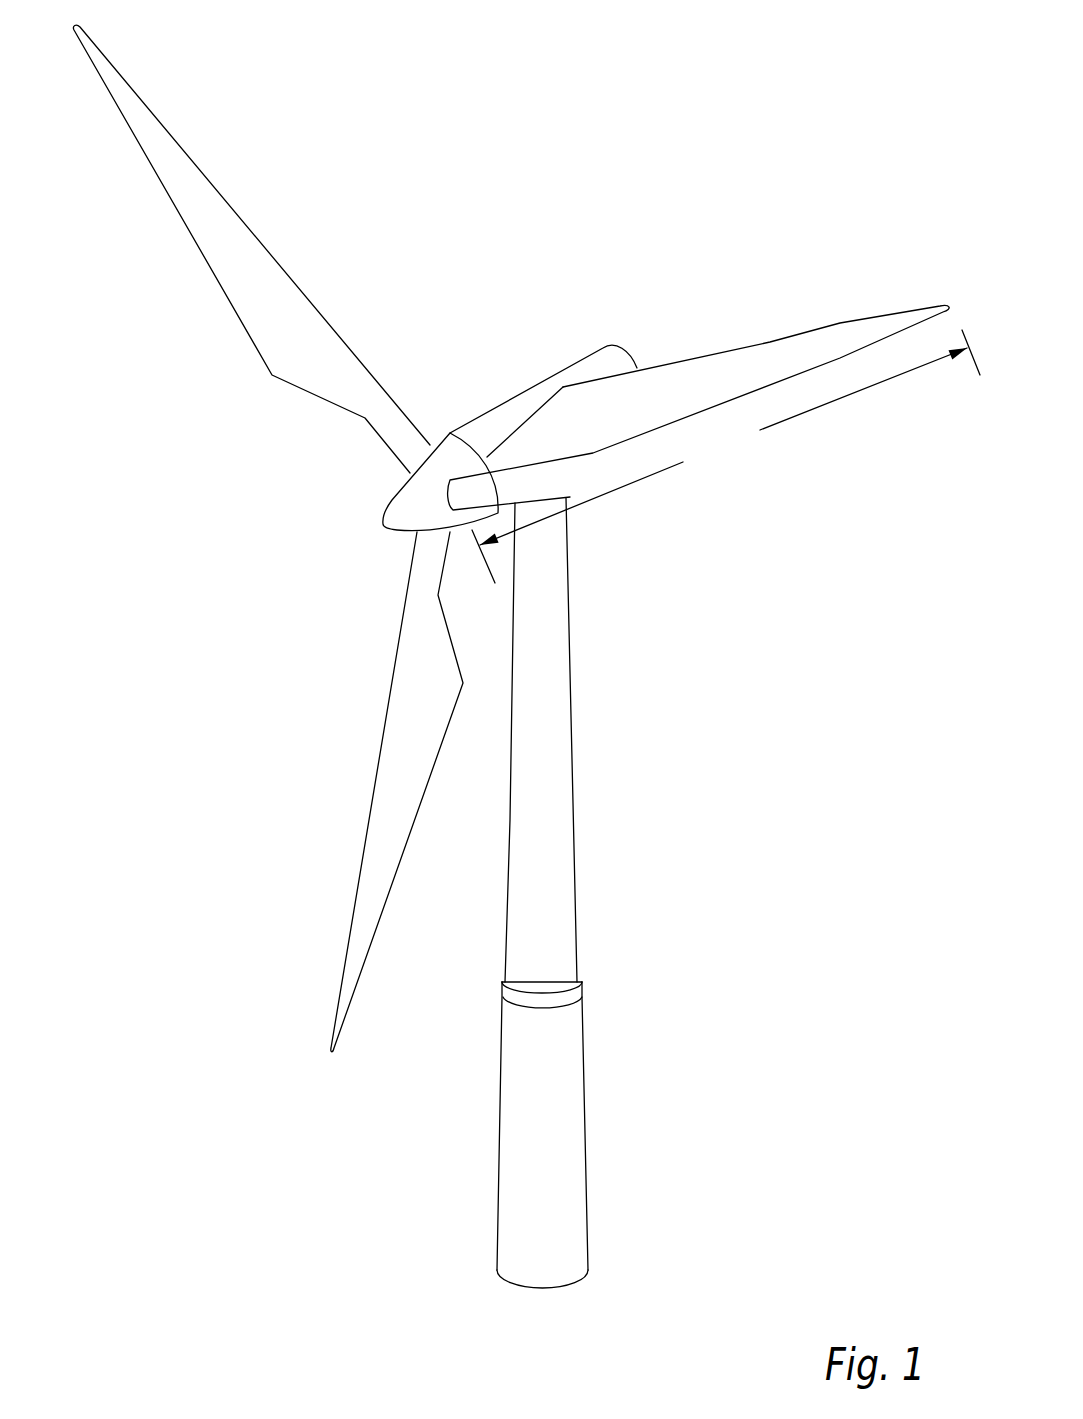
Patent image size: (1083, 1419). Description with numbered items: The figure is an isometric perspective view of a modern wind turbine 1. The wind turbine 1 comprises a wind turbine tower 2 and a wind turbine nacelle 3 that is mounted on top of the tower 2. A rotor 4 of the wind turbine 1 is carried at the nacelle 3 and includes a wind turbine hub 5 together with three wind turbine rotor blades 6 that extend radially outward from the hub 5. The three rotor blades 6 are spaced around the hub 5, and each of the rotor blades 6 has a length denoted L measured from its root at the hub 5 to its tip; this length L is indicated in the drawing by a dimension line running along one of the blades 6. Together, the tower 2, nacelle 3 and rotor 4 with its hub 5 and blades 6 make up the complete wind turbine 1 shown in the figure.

The wind turbine 1 is at (618, 271).
The wind turbine tower 2 is at (573, 802).
The wind turbine nacelle 3 is at (507, 398).
The rotor 4 is at (93, 42).
The wind turbine hub 5 is at (385, 527).
The wind turbine rotor blades 6 is at (227, 200).